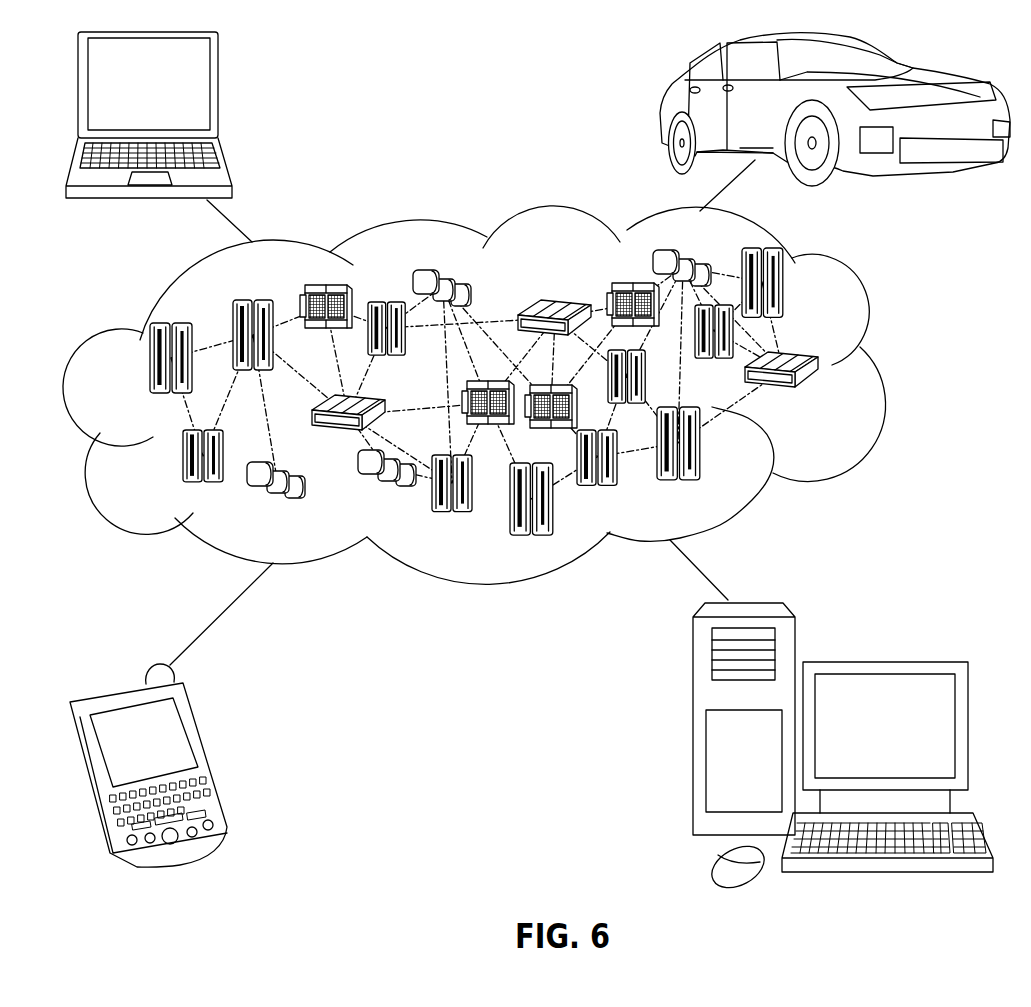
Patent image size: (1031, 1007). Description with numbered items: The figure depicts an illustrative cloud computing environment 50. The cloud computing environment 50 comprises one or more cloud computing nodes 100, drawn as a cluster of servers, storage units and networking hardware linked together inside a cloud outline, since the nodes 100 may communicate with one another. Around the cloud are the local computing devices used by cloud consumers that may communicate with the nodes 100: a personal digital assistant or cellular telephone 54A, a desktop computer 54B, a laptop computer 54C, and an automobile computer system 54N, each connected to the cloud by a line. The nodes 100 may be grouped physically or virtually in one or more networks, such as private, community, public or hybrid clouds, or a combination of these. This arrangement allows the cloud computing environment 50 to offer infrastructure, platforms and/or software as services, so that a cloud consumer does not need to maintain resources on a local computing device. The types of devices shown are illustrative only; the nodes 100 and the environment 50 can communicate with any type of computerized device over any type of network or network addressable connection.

The cloud computing environment 50 is at (884, 370).
The cloud computing nodes 100 is at (825, 400).
The personal digital assistant or cellular telephone 54A is at (207, 757).
The desktop computer 54B is at (882, 662).
The laptop computer 54C is at (218, 92).
The automobile computer system 54N is at (660, 112).